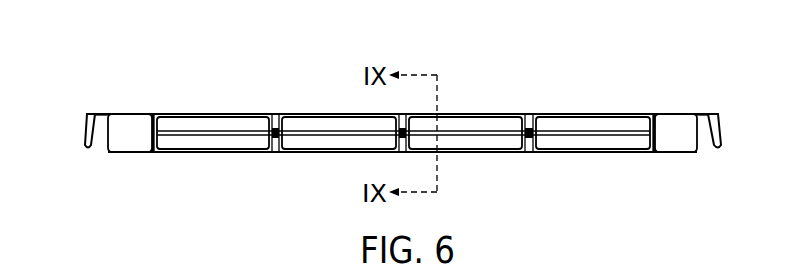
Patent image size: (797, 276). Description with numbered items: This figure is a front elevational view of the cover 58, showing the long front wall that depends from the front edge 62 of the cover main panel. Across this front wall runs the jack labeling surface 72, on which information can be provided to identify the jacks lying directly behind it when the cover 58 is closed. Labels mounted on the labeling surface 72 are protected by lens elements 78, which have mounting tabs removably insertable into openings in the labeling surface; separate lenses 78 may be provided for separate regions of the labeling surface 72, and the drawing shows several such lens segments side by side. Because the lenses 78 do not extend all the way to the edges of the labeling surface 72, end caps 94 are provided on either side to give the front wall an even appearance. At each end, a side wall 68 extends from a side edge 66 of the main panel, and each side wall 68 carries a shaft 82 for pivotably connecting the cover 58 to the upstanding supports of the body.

The cover 58 is at (643, 78).
The front edge 62 is at (231, 108).
The side edges 66 is at (403, 124).
The side walls 68 is at (87, 133).
The labeling surface 72 is at (330, 142).
The lens elements 78 is at (220, 142).
The shaft 82 is at (95, 142).
The end caps 94 is at (130, 145).